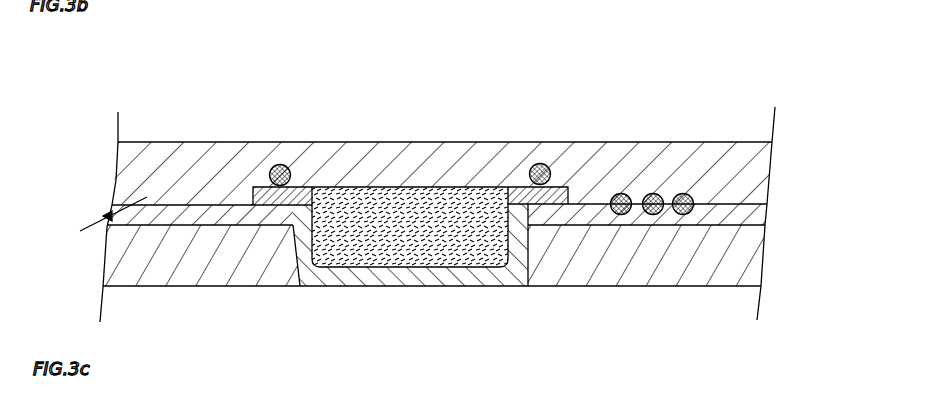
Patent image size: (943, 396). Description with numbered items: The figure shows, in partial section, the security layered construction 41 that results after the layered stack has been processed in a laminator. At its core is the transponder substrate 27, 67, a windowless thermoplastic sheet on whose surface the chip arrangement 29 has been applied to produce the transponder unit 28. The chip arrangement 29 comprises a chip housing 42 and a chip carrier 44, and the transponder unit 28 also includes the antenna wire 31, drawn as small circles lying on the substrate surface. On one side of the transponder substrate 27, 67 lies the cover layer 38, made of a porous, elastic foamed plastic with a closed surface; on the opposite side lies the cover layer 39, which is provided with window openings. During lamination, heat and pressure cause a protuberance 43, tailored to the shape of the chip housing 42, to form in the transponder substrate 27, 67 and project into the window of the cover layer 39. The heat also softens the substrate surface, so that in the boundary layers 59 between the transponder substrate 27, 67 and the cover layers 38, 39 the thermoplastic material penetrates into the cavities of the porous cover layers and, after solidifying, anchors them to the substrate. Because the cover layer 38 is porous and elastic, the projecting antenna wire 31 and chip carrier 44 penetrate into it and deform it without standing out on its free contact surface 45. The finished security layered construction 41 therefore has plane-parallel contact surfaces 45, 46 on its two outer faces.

The security layered construction 41 is at (407, 111).
The chip arrangement 29 is at (429, 111).
The transponder unit 28 is at (574, 146).
The cover layer 38 is at (691, 146).
The contact surface 45 is at (739, 139).
The chip carrier 44 is at (319, 184).
The chip housing 42 is at (504, 182).
The boundary layer 59 is at (186, 196).
The transponder substrate 27 is at (745, 195).
The transponder substrate 67 is at (753, 218).
The antenna wire 31 is at (629, 185).
The protuberance 43 is at (405, 286).
The cover layer 39 is at (612, 286).
The contact surface 46 is at (720, 286).